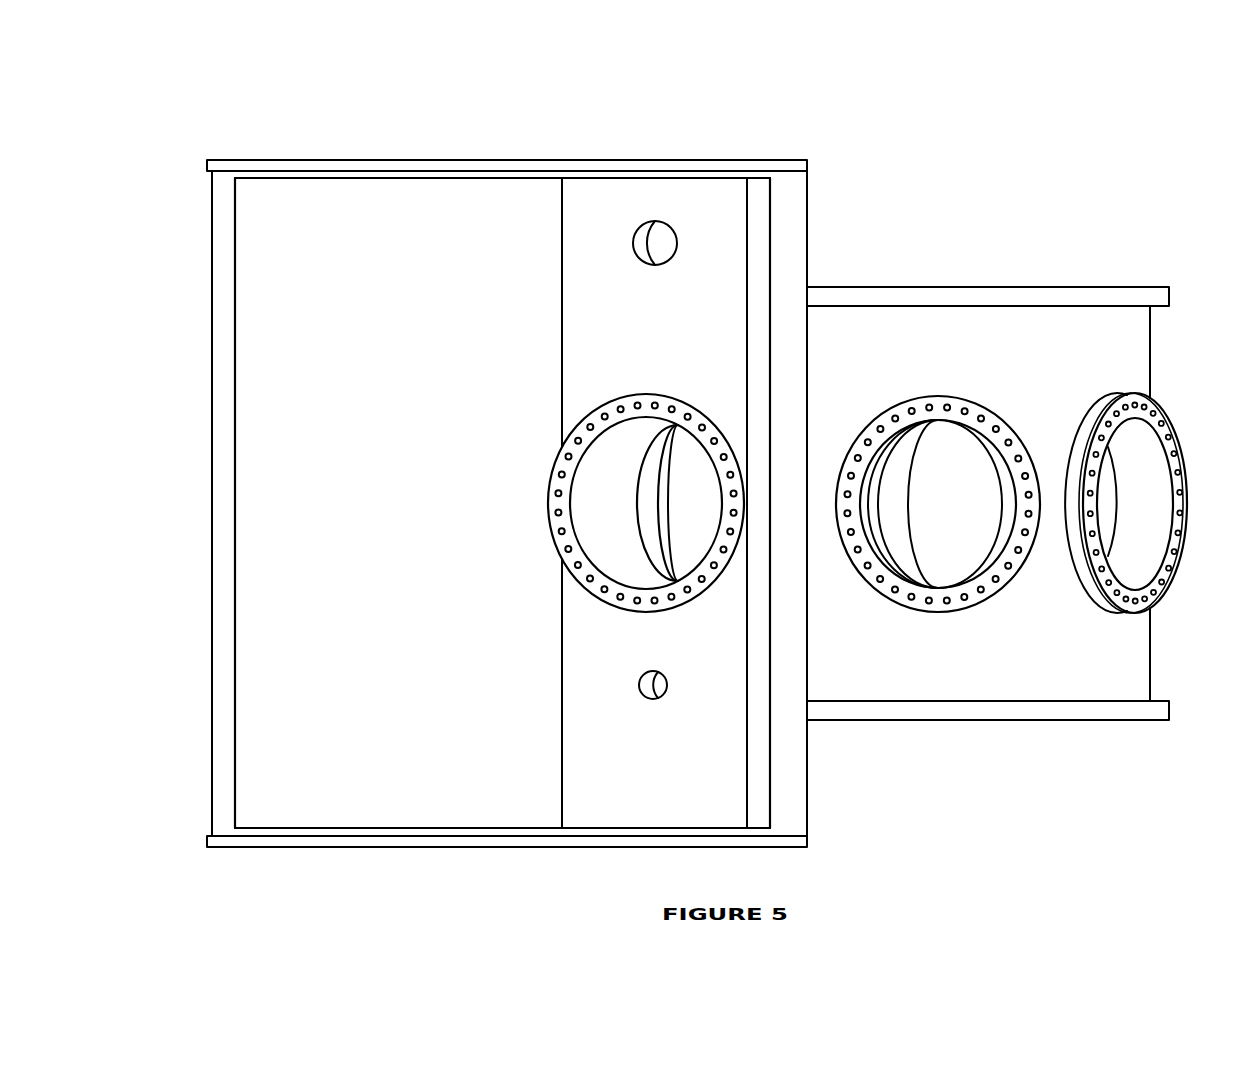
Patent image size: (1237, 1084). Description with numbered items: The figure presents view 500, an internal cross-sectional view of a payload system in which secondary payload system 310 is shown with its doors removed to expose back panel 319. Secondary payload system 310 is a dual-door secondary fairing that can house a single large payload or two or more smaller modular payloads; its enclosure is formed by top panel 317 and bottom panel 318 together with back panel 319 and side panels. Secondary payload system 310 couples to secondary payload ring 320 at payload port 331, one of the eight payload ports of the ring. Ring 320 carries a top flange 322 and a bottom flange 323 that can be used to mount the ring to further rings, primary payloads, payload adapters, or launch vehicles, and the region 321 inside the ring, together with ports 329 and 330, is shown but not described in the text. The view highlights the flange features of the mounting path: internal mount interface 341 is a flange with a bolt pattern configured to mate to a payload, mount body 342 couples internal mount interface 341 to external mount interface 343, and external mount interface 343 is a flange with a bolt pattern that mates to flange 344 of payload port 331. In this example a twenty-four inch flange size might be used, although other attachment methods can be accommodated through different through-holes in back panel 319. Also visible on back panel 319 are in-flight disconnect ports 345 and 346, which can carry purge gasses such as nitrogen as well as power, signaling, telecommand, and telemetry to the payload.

The view 500 is at (230, 91).
The secondary payload system 310 is at (506, 141).
The top panel 317 is at (315, 190).
The bottom panel 318 is at (325, 812).
The back panel 319 is at (585, 329).
The secondary payload ring 320 is at (972, 270).
The chamber 321 is at (1121, 503).
The top flange 322 is at (1119, 268).
The bottom flange 323 is at (1135, 736).
The flange 329 is at (1106, 618).
The flange 330 is at (983, 619).
The payload port 331 is at (685, 517).
The internal mount interface 341 is at (540, 536).
The mount body 342 is at (646, 503).
The external mount interface 343 is at (655, 502).
The flange 344 is at (670, 514).
The in-flight disconnect port 345 is at (618, 248).
The in-flight disconnect port 346 is at (618, 691).